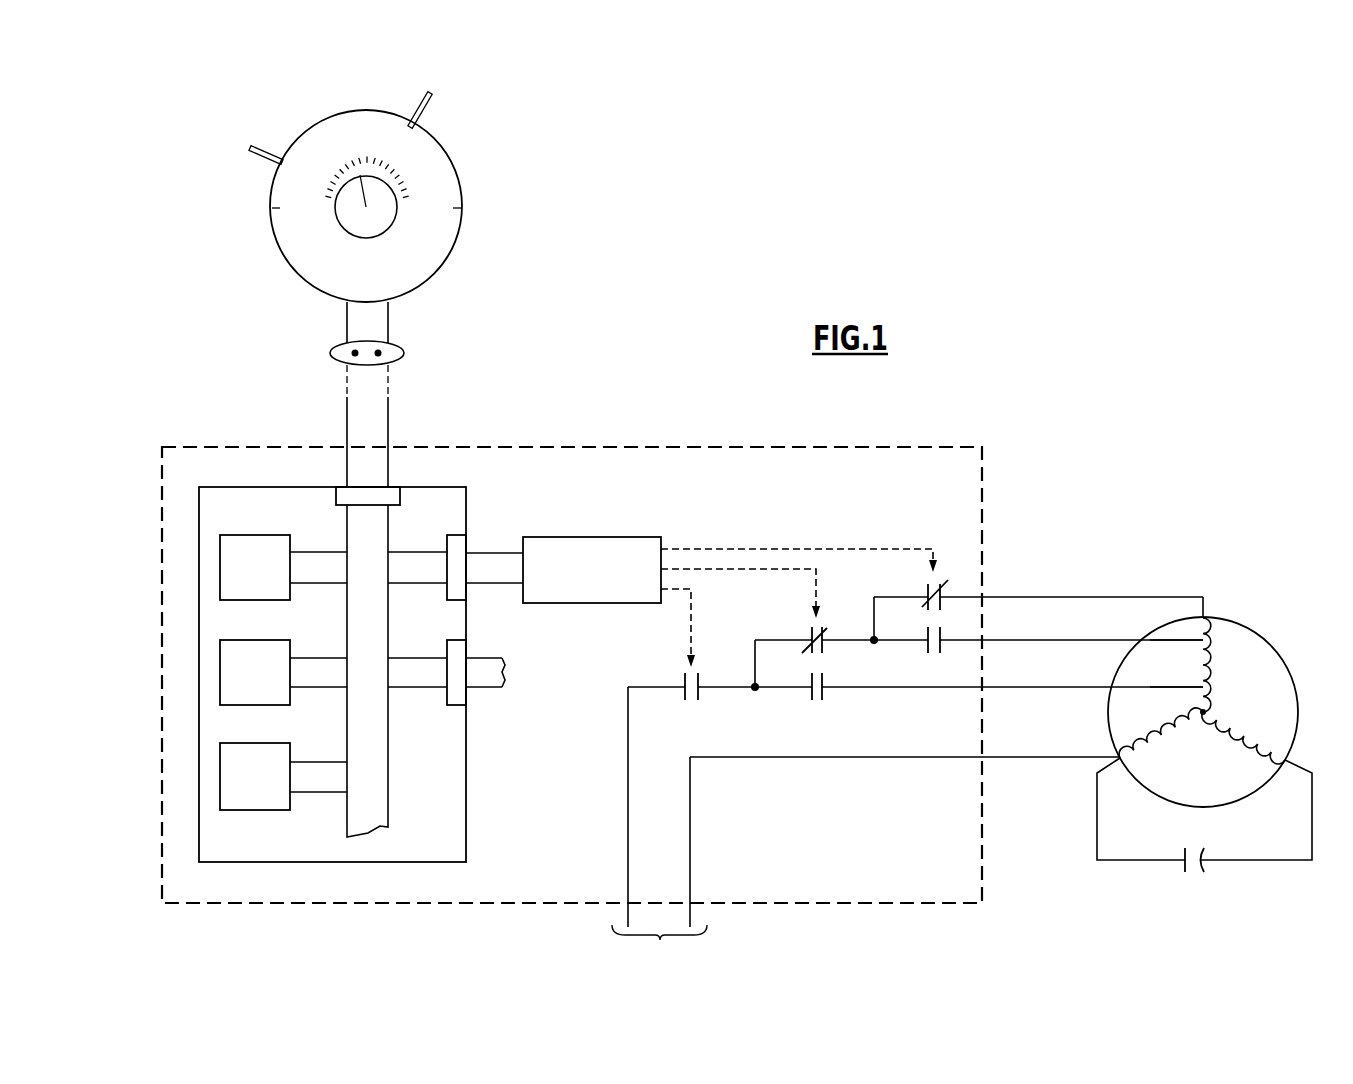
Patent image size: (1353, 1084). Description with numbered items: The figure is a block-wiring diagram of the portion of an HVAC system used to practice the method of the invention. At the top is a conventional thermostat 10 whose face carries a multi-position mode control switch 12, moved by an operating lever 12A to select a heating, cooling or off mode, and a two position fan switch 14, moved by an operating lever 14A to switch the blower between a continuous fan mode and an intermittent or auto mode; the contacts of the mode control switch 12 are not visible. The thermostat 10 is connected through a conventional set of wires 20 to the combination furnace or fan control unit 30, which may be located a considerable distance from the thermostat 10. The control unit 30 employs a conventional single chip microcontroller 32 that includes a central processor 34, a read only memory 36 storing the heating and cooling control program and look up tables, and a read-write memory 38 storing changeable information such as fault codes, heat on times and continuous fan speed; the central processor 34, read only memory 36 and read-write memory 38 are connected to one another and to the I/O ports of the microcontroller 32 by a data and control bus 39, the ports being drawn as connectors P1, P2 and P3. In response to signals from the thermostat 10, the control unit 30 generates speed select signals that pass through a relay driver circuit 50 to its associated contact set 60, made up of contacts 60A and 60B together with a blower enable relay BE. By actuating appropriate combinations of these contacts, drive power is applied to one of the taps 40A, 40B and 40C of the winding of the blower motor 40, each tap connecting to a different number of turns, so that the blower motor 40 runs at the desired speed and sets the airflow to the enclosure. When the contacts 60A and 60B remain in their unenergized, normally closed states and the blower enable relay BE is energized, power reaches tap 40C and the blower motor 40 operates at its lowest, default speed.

The thermostat 10 is at (285, 316).
The multi-position mode control switch 12 is at (252, 190).
The operating lever 12A is at (251, 147).
The two position fan switch 14 is at (461, 145).
The operating lever 14A is at (431, 95).
The set of wires 20 is at (404, 350).
The combination furnace or fan control unit 30 is at (496, 438).
The microcontroller 32 is at (361, 660).
The central processor 34 is at (258, 535).
The read only memory 36 is at (258, 640).
The read-write memory 38 is at (258, 743).
The data and control bus 39 is at (390, 776).
The blower motor 40 is at (1179, 715).
The tap 40A is at (1022, 687).
The tap 40B is at (1050, 640).
The tap 40C is at (1203, 597).
The relay driver circuit 50 is at (625, 537).
The contact set 60 is at (907, 738).
The contacts 60A is at (797, 706).
The contacts 60B is at (915, 656).
The connector P1 is at (400, 504).
The connector P2 is at (447, 600).
The connector P3 is at (447, 705).
The blower enable relay BE is at (691, 704).